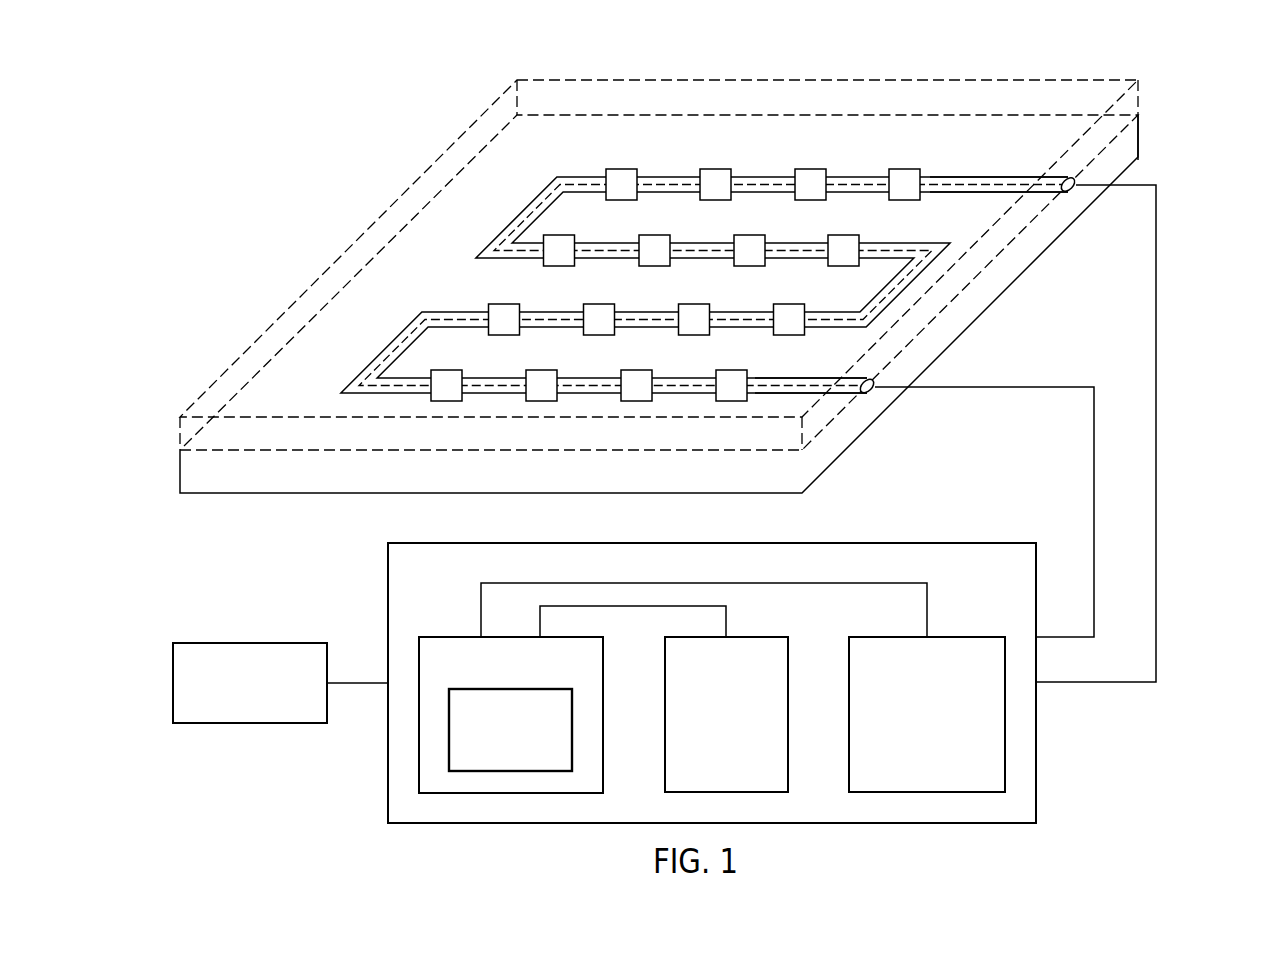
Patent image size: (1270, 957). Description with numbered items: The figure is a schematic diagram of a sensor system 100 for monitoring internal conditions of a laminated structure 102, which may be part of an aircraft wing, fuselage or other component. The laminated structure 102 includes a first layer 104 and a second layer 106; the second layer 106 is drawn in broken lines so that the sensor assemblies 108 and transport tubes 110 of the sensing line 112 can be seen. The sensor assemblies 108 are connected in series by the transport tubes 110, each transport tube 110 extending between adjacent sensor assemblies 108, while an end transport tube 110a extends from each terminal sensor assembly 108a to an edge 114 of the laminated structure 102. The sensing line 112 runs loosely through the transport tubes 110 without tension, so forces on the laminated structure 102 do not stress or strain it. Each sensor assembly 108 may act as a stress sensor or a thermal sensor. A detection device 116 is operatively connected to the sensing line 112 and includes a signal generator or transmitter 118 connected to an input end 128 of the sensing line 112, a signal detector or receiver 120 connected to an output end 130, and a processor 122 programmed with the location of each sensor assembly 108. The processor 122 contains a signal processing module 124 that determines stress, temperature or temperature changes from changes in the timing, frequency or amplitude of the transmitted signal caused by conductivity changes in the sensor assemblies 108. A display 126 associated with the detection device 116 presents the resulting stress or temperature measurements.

The sensor system 100 is at (1168, 319).
The laminated structure 102 is at (714, 278).
The first layer 104 is at (1138, 130).
The second layer 106 is at (1140, 82).
The sensor assembly 108 is at (622, 168).
The terminal sensor assembly 108a is at (906, 168).
The transport tube 110 is at (673, 177).
The end transport tube 110a is at (980, 177).
The sensing line 112 is at (950, 186).
The edge 114 is at (1125, 157).
The detection device 116 is at (846, 542).
The signal generator or transmitter 118 is at (970, 637).
The signal detector or receiver 120 is at (761, 637).
The processor 122 is at (436, 637).
The signal processing module 124 is at (573, 730).
The display 126 is at (249, 642).
The input end 128 is at (1071, 188).
The output end 130 is at (872, 391).